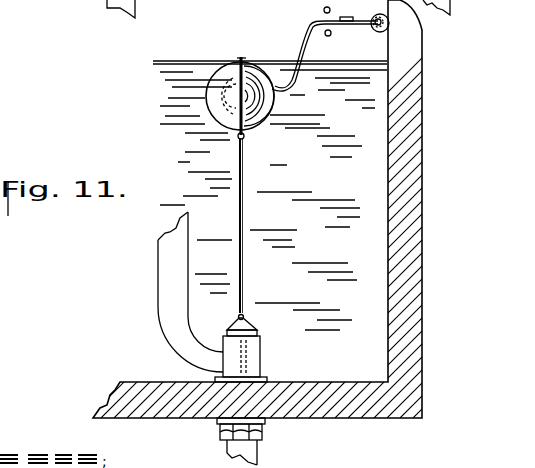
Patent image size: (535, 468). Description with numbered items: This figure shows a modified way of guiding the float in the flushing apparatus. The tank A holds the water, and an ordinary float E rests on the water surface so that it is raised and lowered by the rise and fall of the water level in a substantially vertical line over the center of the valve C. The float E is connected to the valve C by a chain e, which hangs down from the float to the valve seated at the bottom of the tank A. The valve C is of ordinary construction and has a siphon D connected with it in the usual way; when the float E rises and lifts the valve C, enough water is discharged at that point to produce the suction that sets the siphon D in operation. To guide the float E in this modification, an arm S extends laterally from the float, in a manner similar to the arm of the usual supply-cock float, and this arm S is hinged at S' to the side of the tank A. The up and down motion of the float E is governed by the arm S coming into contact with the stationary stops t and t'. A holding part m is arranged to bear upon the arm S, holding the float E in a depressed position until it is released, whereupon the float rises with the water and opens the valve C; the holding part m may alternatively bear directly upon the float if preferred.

The tank A is at (298, 209).
The valve C is at (242, 386).
The siphon D is at (128, 287).
The float E is at (240, 58).
The chain e is at (247, 226).
The arm S is at (325, 56).
The hinge S' is at (375, 35).
The stationary stop t is at (326, 6).
The stationary stop t' is at (326, 42).
The holding part m is at (349, 10).